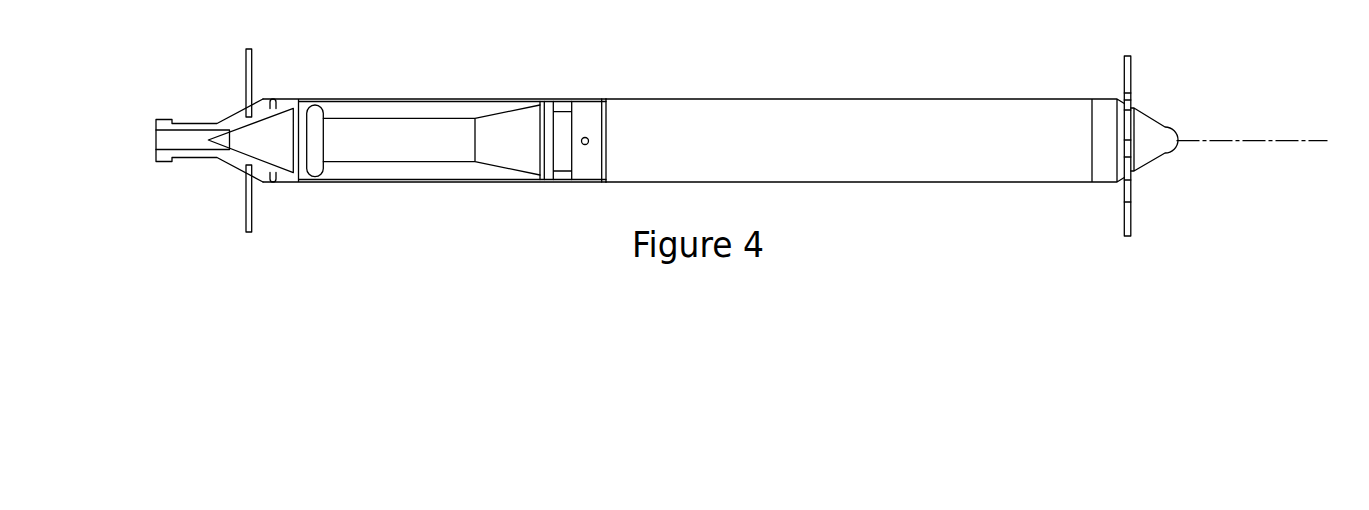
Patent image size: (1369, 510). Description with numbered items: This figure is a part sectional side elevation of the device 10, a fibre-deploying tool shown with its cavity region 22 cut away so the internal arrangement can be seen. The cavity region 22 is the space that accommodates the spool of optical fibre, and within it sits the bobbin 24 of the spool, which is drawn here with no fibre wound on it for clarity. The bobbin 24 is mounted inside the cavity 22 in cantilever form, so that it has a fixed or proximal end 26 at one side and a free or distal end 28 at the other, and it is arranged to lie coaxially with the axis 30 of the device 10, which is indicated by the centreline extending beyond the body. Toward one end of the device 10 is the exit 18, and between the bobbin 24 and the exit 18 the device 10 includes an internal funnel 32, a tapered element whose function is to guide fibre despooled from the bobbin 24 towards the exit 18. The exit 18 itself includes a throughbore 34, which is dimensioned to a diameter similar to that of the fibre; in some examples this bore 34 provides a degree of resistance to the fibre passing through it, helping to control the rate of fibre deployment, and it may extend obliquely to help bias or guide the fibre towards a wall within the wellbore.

The device 10 is at (968, 135).
The exit 18 is at (162, 123).
The cavity region 22 is at (402, 97).
The bobbin 24 is at (458, 135).
The proximal end 26 is at (603, 138).
The distal end 28 is at (307, 138).
The axis 30 is at (1268, 141).
The internal funnel 32 is at (245, 140).
The throughbore 34 is at (187, 140).